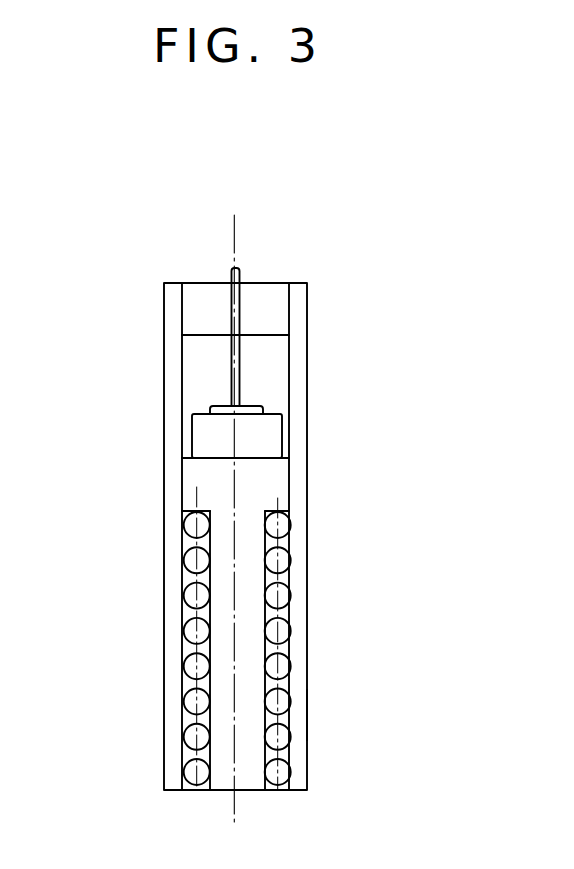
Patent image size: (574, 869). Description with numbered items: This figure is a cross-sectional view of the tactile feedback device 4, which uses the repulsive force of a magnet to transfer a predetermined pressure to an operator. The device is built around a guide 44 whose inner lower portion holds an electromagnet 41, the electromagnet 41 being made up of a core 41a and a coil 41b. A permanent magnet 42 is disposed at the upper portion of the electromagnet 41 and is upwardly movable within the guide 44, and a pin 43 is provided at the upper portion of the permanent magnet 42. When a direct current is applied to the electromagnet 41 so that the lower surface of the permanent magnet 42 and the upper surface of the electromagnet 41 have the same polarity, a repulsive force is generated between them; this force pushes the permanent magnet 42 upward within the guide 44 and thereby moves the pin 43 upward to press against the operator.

The tactile feedback device 4 is at (160, 605).
The electromagnet 41 is at (280, 621).
The core 41a is at (218, 706).
The coil 41b is at (193, 736).
The permanent magnet 42 is at (203, 444).
The pin 43 is at (247, 285).
The guide 44 is at (302, 717).